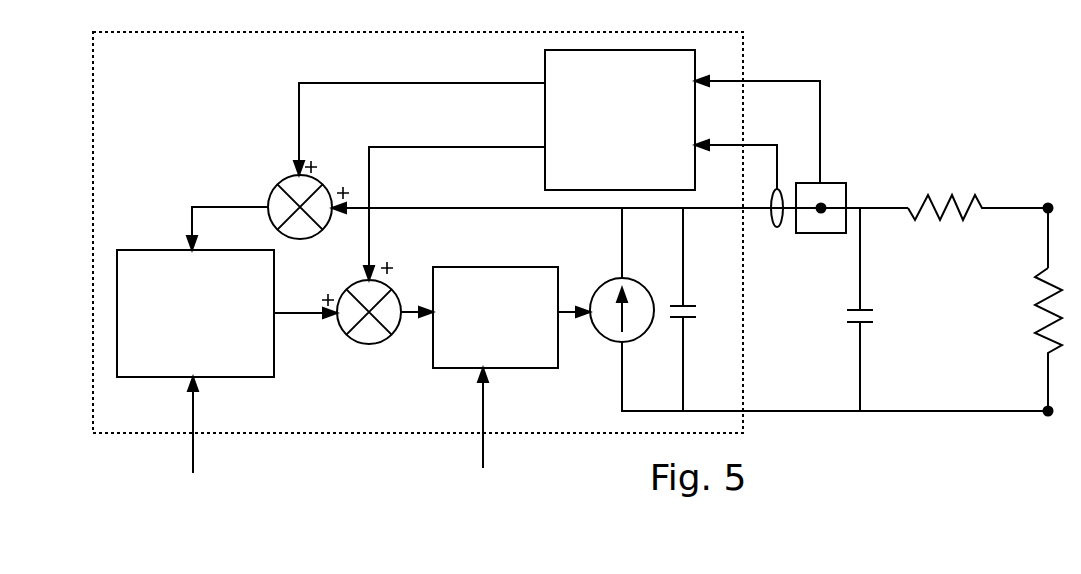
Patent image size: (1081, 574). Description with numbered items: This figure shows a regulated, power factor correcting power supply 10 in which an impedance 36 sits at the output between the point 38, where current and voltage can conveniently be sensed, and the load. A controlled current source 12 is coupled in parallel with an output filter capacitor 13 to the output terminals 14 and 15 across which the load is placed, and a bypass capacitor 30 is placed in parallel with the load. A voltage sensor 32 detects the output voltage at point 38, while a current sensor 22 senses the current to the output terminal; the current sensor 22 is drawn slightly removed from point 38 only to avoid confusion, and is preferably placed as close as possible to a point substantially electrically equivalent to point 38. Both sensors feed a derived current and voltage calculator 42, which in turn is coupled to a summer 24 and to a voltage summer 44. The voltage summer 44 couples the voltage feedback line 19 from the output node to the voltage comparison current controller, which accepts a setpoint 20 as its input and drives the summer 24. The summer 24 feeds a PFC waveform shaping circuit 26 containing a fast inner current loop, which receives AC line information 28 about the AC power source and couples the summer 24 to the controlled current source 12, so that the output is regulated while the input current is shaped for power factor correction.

The regulated power supply 10 is at (743, 53).
The controlled current source 12 is at (590, 332).
The output filter capacitor 13 is at (670, 317).
The output terminal 14 is at (1048, 203).
The output terminal 15 is at (1047, 414).
The voltage feedback connection 19 is at (492, 209).
The setpoint 20 is at (190, 417).
The current sensor 22 is at (775, 189).
The summer 24 is at (370, 345).
The PFC waveform shaping circuit 26 is at (433, 363).
The AC line information 28 is at (482, 443).
The bypass capacitor 30 is at (843, 318).
The voltage sensor 32 is at (843, 183).
The impedance 36 is at (962, 200).
The point 38 is at (820, 213).
The derived current and voltage calculator 42 is at (545, 110).
The voltage summer 44 is at (280, 183).